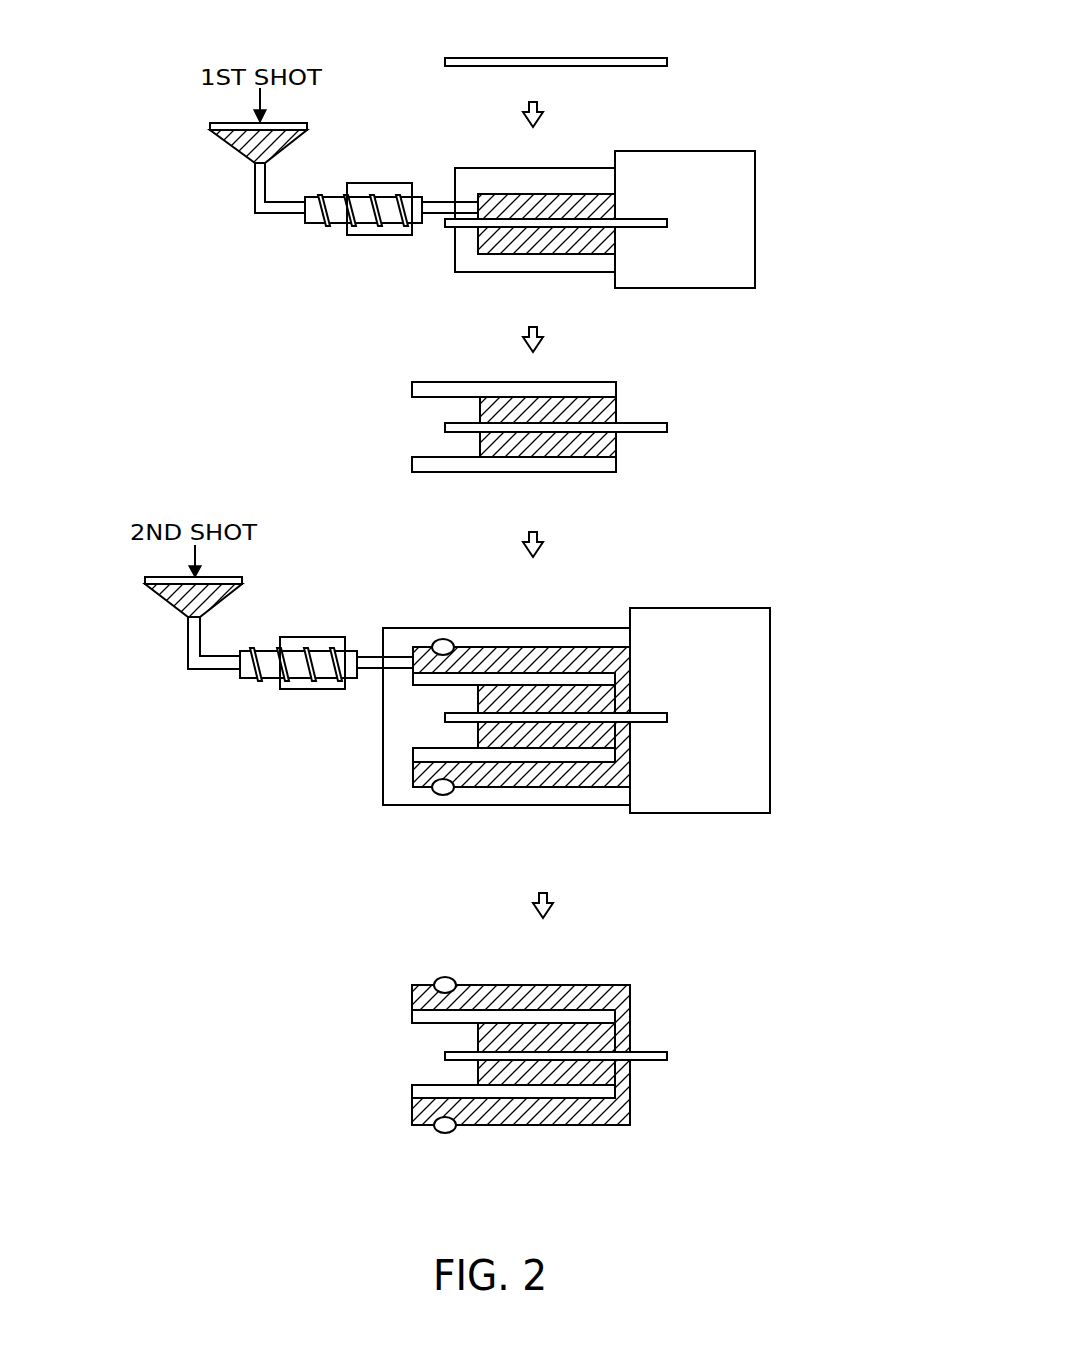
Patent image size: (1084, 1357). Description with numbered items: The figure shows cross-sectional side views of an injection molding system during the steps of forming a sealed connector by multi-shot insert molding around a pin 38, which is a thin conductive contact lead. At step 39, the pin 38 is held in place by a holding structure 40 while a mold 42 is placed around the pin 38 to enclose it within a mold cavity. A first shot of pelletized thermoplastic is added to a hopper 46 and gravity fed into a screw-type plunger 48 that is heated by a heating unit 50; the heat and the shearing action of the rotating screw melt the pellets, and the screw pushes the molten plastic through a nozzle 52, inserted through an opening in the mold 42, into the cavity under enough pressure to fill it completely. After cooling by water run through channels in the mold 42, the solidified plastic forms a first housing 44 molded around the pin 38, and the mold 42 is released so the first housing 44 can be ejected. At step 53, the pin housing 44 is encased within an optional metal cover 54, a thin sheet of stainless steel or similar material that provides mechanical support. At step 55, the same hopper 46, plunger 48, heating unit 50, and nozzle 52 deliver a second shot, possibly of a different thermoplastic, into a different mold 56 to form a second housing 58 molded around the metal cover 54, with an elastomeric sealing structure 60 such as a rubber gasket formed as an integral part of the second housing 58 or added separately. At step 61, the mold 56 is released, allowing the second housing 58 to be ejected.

The pin 38 is at (660, 57).
The step 39 is at (853, 115).
The holding structure 40 is at (756, 173).
The mold 42 is at (470, 177).
The first housing 44 is at (575, 200).
The hopper 46 is at (205, 120).
The screw-type plunger 48 is at (313, 223).
The heating unit 50 is at (378, 183).
The nozzle 52 is at (458, 214).
The step 53 is at (853, 350).
The metal cover 54 is at (415, 463).
The step 55 is at (853, 603).
The mold 56 is at (390, 747).
The second housing 58 is at (569, 780).
The elastomeric sealing structure 60 is at (441, 640).
The step 61 is at (853, 952).